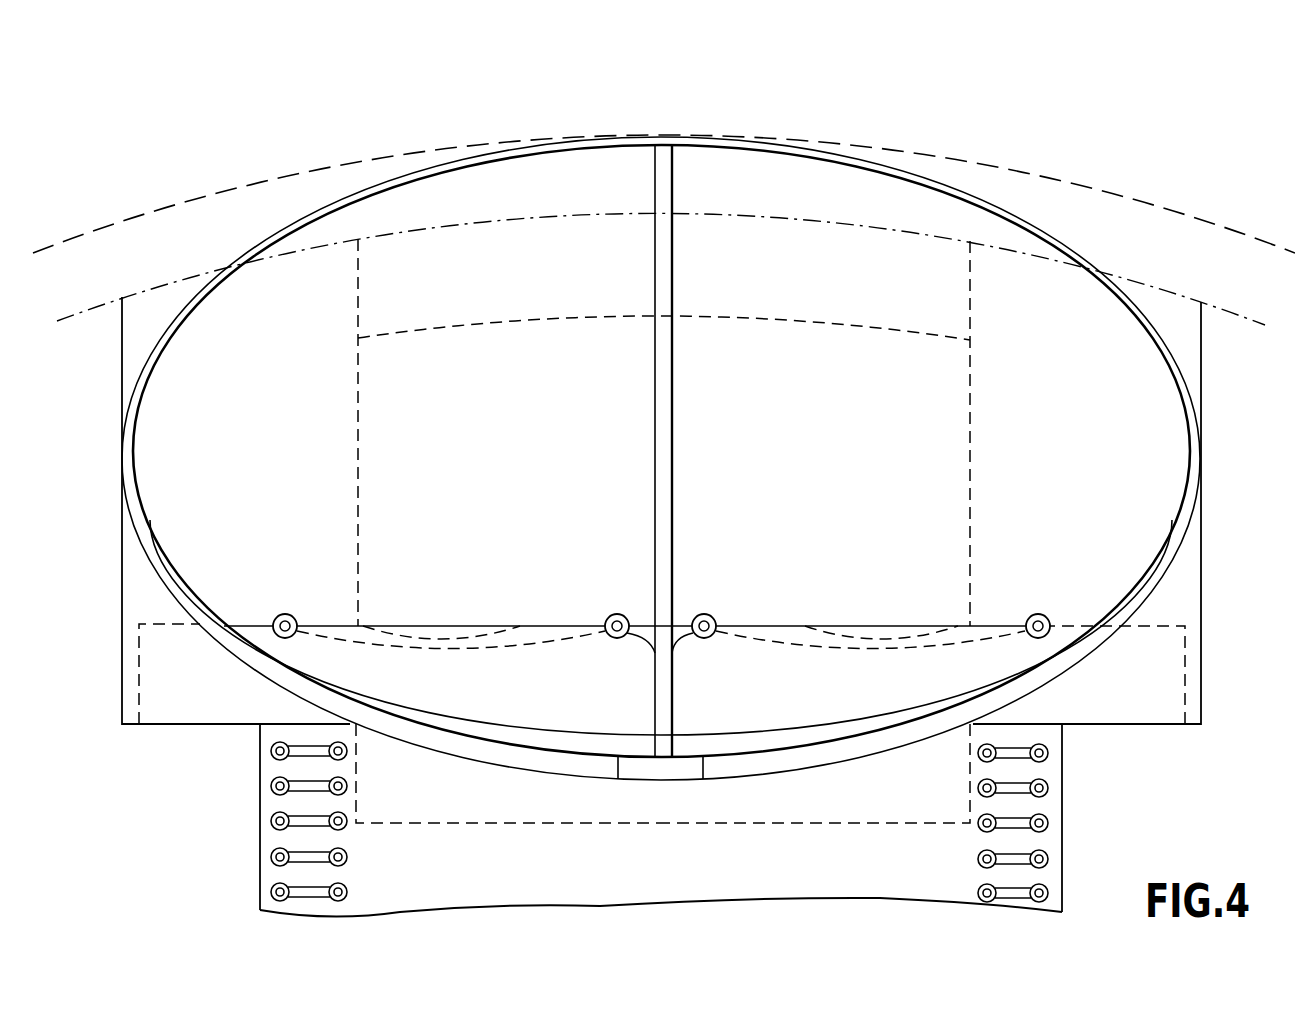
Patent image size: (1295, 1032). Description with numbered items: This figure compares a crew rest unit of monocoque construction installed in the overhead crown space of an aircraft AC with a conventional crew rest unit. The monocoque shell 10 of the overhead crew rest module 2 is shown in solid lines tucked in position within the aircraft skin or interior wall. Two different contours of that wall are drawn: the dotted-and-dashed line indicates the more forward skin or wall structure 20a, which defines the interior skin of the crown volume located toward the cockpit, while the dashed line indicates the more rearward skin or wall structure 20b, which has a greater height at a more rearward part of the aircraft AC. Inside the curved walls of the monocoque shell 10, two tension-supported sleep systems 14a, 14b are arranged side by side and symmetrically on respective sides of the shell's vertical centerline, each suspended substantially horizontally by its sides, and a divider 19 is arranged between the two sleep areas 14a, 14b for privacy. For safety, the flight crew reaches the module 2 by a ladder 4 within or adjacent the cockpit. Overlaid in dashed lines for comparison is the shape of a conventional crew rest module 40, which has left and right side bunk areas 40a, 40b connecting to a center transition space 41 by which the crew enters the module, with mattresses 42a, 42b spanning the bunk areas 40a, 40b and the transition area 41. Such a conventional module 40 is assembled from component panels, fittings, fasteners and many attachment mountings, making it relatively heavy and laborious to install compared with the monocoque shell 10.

The aircraft AC is at (352, 139).
The crew rest module 2 is at (1205, 518).
The ladder 4 is at (1020, 796).
The monocoque shell 10 is at (864, 745).
The tension-supported sleep system 14a is at (570, 646).
The tension-supported sleep system 14b is at (769, 647).
The divider 19 is at (672, 492).
The forward skin or wall structure 20a is at (1162, 294).
The rearward skin or wall structure 20b is at (1148, 209).
The conventional crew rest module 40 is at (358, 400).
The left side bunk area 40a is at (270, 443).
The right side bunk area 40b is at (1082, 438).
The center transition space 41 is at (623, 443).
The mattress 42a is at (503, 687).
The mattress 42b is at (840, 693).